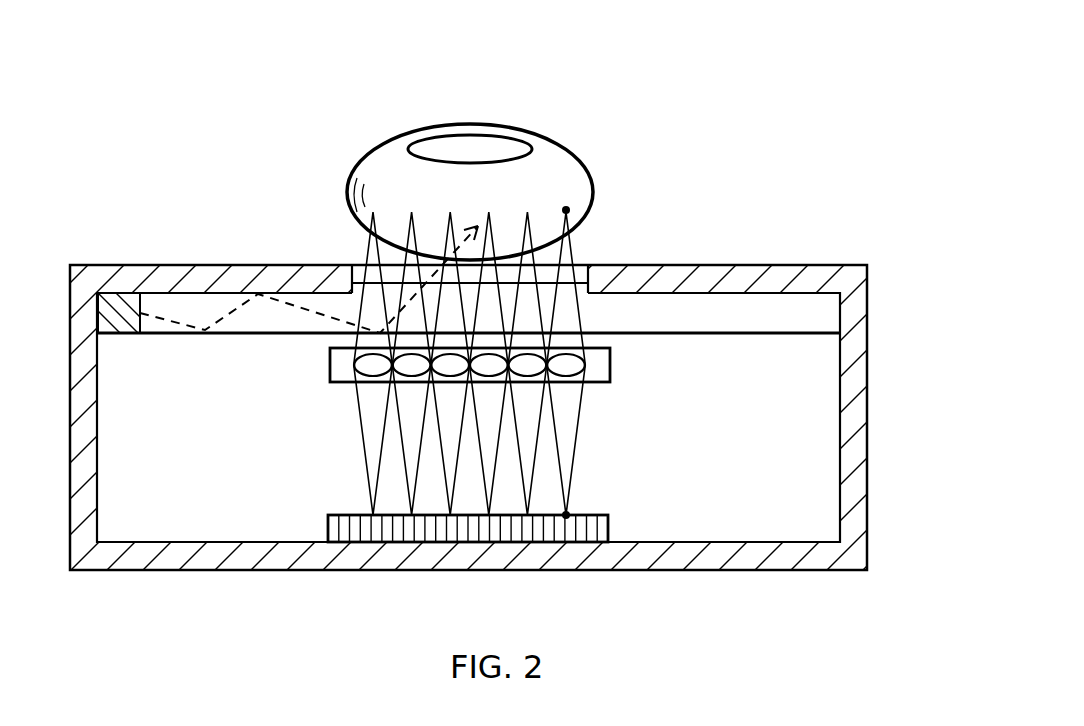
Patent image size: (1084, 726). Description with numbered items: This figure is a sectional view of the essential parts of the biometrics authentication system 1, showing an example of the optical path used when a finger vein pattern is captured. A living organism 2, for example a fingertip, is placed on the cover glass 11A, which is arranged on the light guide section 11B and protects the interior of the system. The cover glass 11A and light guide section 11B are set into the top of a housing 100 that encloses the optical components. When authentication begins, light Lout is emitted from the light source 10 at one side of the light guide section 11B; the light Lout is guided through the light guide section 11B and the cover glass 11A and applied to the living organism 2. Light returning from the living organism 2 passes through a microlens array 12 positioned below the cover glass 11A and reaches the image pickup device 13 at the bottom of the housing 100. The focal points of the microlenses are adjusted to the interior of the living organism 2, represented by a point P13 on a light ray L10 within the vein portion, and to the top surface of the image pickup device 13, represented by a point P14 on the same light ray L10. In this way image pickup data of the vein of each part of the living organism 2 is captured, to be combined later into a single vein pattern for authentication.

The biometrics authentication system 1 is at (888, 222).
The living organism 2 is at (580, 147).
The light source 10 is at (118, 293).
The cover glass 11A is at (353, 264).
The light guide section 11B is at (816, 315).
The microlens array 12 is at (330, 358).
The image pickup device 13 is at (328, 530).
The housing 100 is at (858, 425).
The light ray L10 is at (580, 424).
The light Lout is at (212, 332).
The point P13 is at (566, 210).
The point P14 is at (566, 515).